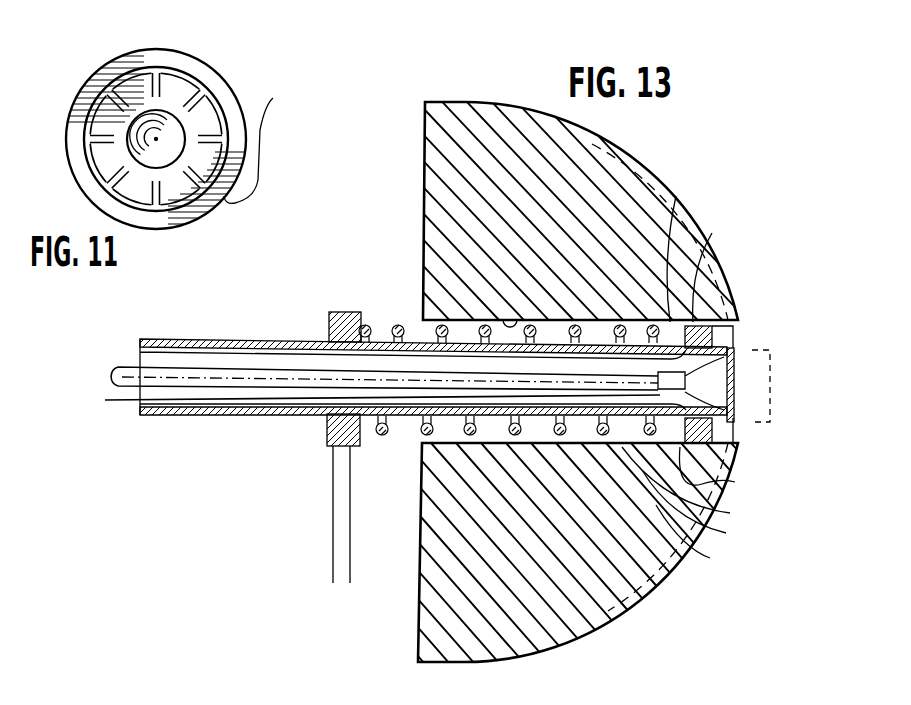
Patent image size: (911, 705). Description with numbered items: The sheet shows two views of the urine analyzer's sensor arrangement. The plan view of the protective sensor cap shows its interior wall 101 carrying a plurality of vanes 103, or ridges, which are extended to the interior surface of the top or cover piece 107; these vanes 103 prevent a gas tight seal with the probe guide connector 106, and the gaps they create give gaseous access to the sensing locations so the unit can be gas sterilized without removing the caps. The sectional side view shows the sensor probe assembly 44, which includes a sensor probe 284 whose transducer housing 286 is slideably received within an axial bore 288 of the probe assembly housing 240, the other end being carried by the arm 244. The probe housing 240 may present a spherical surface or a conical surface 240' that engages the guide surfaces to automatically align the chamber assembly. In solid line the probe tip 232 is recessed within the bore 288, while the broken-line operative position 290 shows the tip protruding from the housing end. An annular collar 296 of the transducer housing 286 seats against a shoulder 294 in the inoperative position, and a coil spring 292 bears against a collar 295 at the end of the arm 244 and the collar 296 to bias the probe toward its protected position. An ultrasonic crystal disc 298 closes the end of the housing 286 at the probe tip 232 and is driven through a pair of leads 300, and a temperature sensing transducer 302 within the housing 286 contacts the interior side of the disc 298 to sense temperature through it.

In FIG. 11, the interior wall 101 is at (185, 96).
In FIG. 11, the vanes 103 is at (110, 128).
In FIG. 11, the probe guide connector 106 is at (137, 90).
In FIG. 11, the cover piece 107 is at (205, 189).
In FIG. 13, the sensor probe assembly 44 is at (657, 172).
In FIG. 13, the axial bore 288 is at (476, 284).
In FIG. 13, the conical surface 240' is at (677, 377).
In FIG. 13, the leads 300 is at (688, 220).
In FIG. 13, the probe assembly housing 240 is at (737, 266).
In FIG. 13, the annular collar 296 is at (716, 256).
In FIG. 13, the probe tip 232 is at (728, 274).
In FIG. 13, the crystal disc 298 is at (765, 349).
In FIG. 13, the operative position 290 is at (770, 422).
In FIG. 13, the shoulder 294 is at (730, 513).
In FIG. 13, the coil spring 292 is at (722, 532).
In FIG. 13, the temperature sensing transducer 302 is at (706, 557).
In FIG. 13, the transducer housing 286 is at (292, 342).
In FIG. 13, the sensor probe 284 is at (222, 355).
In FIG. 13, the collar 295 is at (322, 447).
In FIG. 13, the arm 244 is at (338, 548).